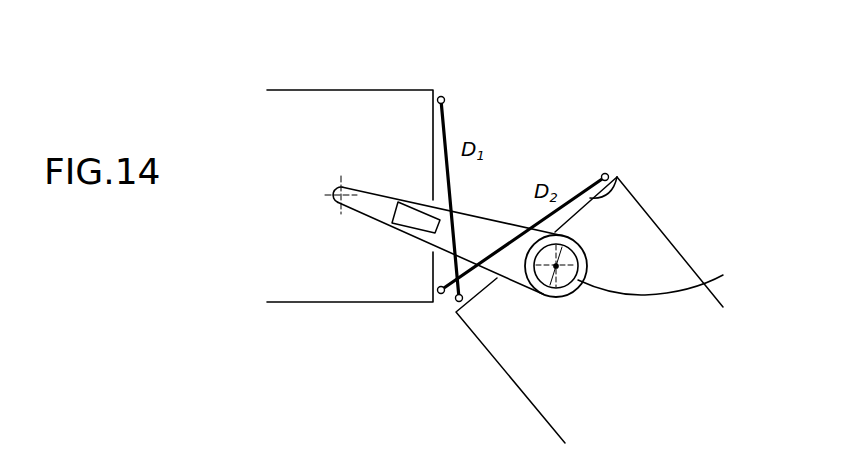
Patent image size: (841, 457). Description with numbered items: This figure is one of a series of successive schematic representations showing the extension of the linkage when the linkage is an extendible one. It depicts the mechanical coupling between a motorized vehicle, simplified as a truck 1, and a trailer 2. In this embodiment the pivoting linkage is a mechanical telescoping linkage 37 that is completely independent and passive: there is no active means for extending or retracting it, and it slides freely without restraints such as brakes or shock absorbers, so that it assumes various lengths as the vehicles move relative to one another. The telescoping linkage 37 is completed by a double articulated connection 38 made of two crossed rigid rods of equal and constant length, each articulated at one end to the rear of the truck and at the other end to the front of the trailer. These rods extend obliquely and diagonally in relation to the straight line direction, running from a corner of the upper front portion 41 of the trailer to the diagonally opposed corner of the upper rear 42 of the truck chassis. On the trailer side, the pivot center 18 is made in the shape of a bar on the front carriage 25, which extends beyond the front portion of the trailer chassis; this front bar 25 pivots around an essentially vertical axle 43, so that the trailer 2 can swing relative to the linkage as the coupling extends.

The truck 1 is at (305, 112).
The trailer 2 is at (658, 263).
The pivot center 18 is at (535, 298).
The front carriage 25 is at (708, 288).
The telescoping linkage 37 is at (523, 215).
The double articulated connection 38 is at (512, 170).
The upper front portion of the trailer 41 is at (628, 188).
The upper rear of truck chassis 42 is at (433, 130).
The vertical axle 43 is at (556, 266).